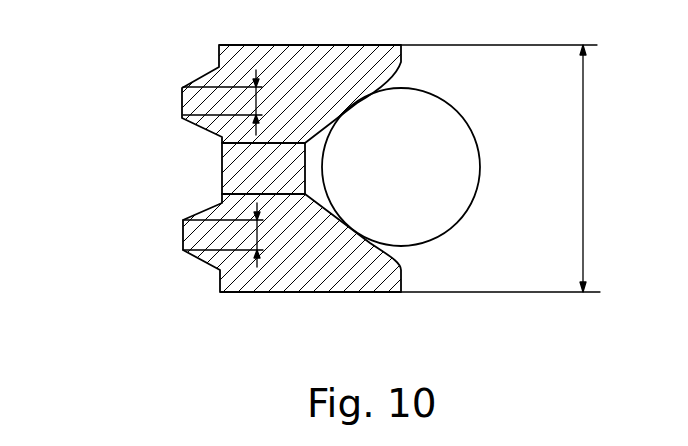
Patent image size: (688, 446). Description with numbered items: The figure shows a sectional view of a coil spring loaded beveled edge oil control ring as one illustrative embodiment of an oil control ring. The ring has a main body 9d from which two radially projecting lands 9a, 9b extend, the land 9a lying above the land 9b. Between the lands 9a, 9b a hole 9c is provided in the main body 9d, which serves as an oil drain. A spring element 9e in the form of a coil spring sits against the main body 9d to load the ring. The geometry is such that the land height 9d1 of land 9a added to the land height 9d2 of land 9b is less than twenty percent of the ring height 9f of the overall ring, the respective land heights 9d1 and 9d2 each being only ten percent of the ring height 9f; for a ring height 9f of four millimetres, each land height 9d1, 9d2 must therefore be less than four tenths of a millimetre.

The land 9a is at (182, 100).
The land 9b is at (182, 233).
The hole 9c is at (221, 169).
The main body 9d is at (337, 270).
The spring element 9e is at (465, 172).
The ring height 9f is at (500, 168).
The land height 9d1 is at (236, 102).
The land height 9d2 is at (236, 235).